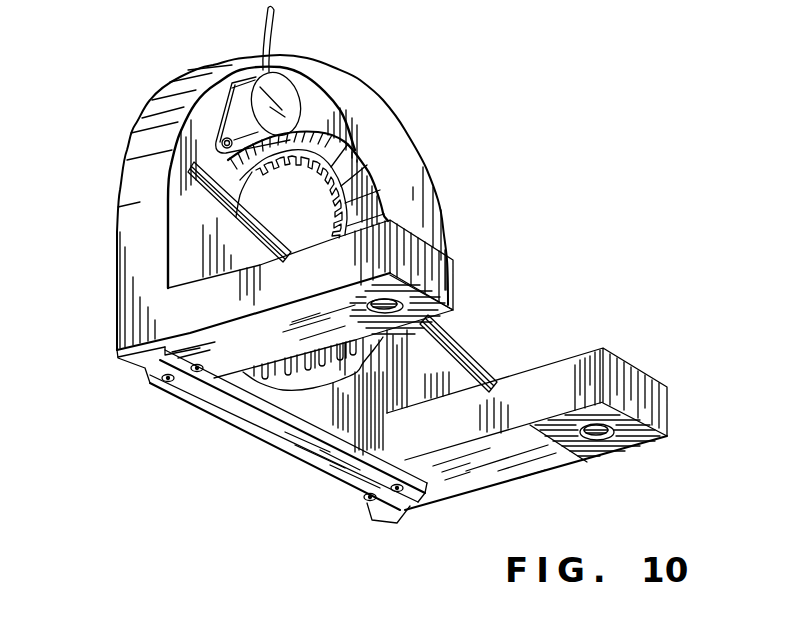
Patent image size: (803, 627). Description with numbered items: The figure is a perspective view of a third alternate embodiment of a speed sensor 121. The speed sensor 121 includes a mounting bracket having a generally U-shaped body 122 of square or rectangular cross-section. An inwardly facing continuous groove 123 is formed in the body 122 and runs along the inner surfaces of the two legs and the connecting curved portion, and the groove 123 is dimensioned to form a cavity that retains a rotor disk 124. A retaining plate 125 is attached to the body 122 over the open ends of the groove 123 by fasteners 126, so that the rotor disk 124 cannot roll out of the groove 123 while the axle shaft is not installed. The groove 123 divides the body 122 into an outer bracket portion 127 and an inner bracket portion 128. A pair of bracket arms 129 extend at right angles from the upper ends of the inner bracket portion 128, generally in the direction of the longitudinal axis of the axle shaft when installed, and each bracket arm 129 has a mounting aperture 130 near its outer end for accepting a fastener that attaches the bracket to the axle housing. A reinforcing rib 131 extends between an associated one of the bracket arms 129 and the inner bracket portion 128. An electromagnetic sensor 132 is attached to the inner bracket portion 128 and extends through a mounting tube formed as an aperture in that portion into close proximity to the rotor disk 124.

The speed sensor 121 is at (442, 93).
The body 122 is at (436, 172).
The groove 123 is at (358, 400).
The rotor disk 124 is at (297, 392).
The retaining plate 125 is at (317, 478).
The fasteners 126 is at (397, 493).
The outer bracket portion 127 is at (130, 362).
The inner bracket portion 128 is at (157, 342).
The bracket arms 129 is at (447, 273).
The mounting aperture 130 is at (397, 312).
The reinforcing rib 131 is at (258, 223).
The electromagnetic sensor 132 is at (283, 90).